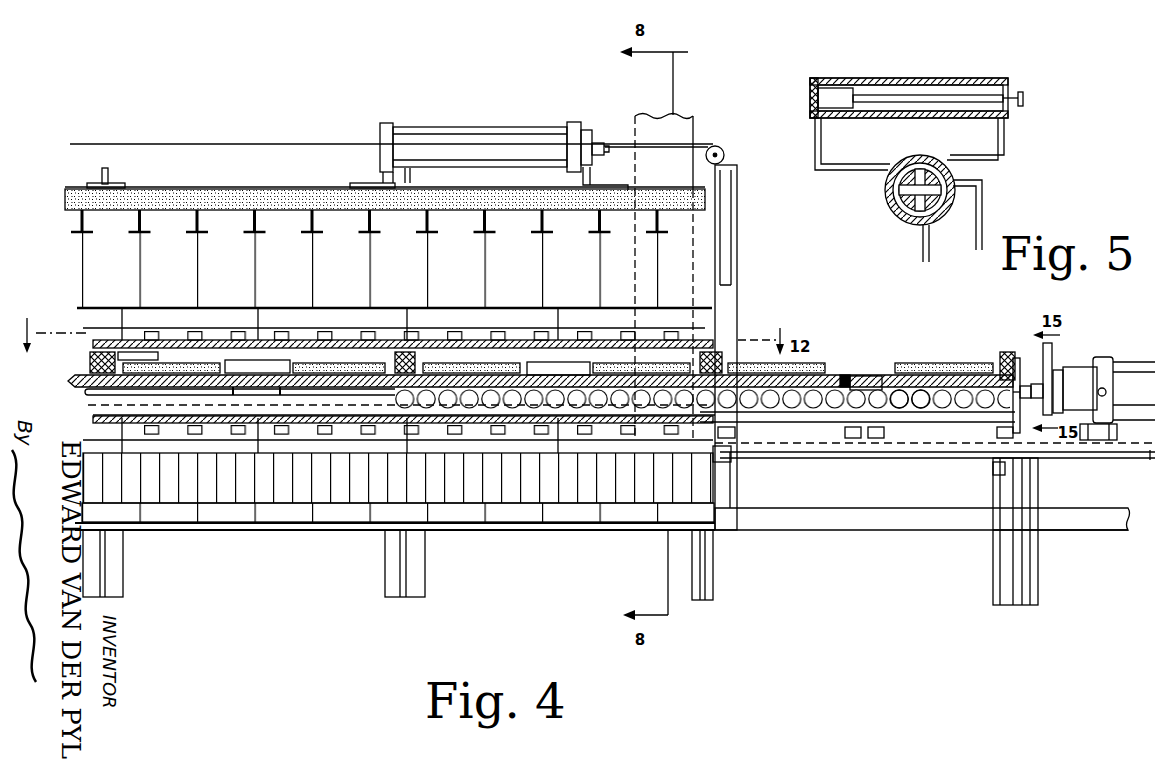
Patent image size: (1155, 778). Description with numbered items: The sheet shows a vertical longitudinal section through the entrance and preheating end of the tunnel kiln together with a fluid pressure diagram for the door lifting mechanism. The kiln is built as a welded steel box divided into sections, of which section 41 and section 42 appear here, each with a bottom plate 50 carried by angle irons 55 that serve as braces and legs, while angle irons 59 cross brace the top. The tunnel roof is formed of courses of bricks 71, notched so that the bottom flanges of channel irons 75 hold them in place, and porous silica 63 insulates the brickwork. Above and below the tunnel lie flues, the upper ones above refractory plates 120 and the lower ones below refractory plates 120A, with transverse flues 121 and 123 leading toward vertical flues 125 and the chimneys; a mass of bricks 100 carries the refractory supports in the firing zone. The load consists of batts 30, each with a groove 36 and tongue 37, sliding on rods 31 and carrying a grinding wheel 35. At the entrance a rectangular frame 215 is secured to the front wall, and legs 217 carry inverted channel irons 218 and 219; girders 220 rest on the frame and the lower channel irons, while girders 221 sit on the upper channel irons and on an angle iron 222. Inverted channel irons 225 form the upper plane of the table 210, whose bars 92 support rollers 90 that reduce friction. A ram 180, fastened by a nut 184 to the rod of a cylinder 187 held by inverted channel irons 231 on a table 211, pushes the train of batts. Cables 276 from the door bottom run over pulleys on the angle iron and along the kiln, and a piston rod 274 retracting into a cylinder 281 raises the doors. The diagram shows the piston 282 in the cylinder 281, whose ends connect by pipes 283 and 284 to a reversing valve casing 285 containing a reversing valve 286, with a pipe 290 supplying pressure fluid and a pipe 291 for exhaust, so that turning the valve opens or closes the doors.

In FIG. 4, the cables 276 is at (249, 144).
In FIG. 4, the angle irons 59 is at (102, 170).
In FIG. 4, the porous silica 63 is at (232, 198).
In FIG. 4, the channel irons 75 is at (193, 207).
In FIG. 4, the courses of bricks 71 is at (90, 263).
In FIG. 4, the transversely extending flues 121 is at (146, 338).
In FIG. 4, the transversely extending parallel flues 123 is at (498, 333).
In FIG. 4, the refractory plates 120 is at (650, 350).
In FIG. 4, the grinding wheel 35 is at (905, 366).
In FIG. 4, the tongue 37 is at (947, 390).
In FIG. 4, the batts 30 is at (877, 385).
In FIG. 4, the rods 31 is at (93, 392).
In FIG. 4, the parallel iron or steel bars 92 is at (970, 417).
In FIG. 4, the rollers 90 is at (918, 410).
In FIG. 4, the mass of bricks 100 is at (621, 416).
In FIG. 4, the refractory plates 120A is at (347, 436).
In FIG. 4, the section 41 is at (526, 532).
In FIG. 4, the bottom plate 50 is at (568, 533).
In FIG. 4, the section 42 is at (237, 530).
In FIG. 4, the angle irons 55 is at (383, 582).
In FIG. 4, the rectangular frame 215 is at (736, 186).
In FIG. 4, the vertical flues 125 is at (640, 122).
In FIG. 4, the cylinder 281 is at (445, 140).
In FIG. 5, the cylinder 281 is at (895, 80).
In FIG. 4, the piston rod 274 is at (598, 145).
In FIG. 5, the piston rod 274 is at (1010, 91).
In FIG. 4, the angle iron 222 is at (730, 457).
In FIG. 4, the inverted channel irons 225 is at (846, 440).
In FIG. 4, the inverted channel irons 231 is at (1092, 441).
In FIG. 4, the long horizontal girders 221 is at (1100, 458).
In FIG. 4, the table 210 is at (867, 483).
In FIG. 4, the legs 217 is at (995, 570).
In FIG. 4, the inverted channel irons 218 is at (1033, 543).
In FIG. 4, the inverted channel irons 219 is at (997, 472).
In FIG. 4, the long horizontal girders 220 is at (1078, 517).
In FIG. 4, the table 211 is at (1127, 497).
In FIG. 4, the ram 180 is at (1043, 343).
In FIG. 4, the nut 184 is at (1036, 384).
In FIG. 4, the groove 36 is at (1022, 385).
In FIG. 4, the cylinder 187 is at (1122, 358).
In FIG. 5, the piston 282 is at (840, 92).
In FIG. 5, the pipe 283 is at (822, 158).
In FIG. 5, the pipe 284 is at (1005, 153).
In FIG. 5, the reversing valve 286 is at (893, 212).
In FIG. 5, the reversing valve casing 285 is at (903, 218).
In FIG. 5, the pipe 290 is at (922, 248).
In FIG. 5, the pipe 291 is at (980, 208).